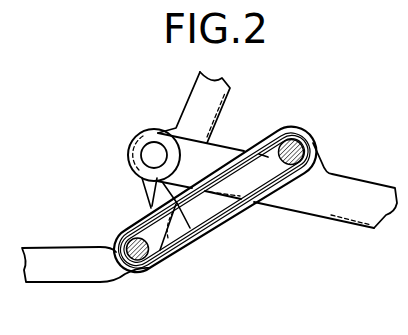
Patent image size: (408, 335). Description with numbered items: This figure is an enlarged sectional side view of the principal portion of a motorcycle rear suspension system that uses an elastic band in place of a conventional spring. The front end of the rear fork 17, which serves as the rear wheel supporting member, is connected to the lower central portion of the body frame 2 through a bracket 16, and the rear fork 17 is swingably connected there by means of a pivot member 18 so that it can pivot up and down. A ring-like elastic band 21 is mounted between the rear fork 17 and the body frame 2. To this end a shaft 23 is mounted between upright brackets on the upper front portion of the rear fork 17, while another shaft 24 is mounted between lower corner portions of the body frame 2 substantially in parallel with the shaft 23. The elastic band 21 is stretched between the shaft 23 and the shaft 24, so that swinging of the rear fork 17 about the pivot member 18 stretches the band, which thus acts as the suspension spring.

The body frame 2 is at (226, 100).
The bracket 16 is at (145, 196).
The rear fork 17 is at (361, 222).
The pivot member 18 is at (152, 150).
The elastic band 21 is at (212, 230).
The shaft 23 is at (306, 136).
The shaft 24 is at (141, 268).